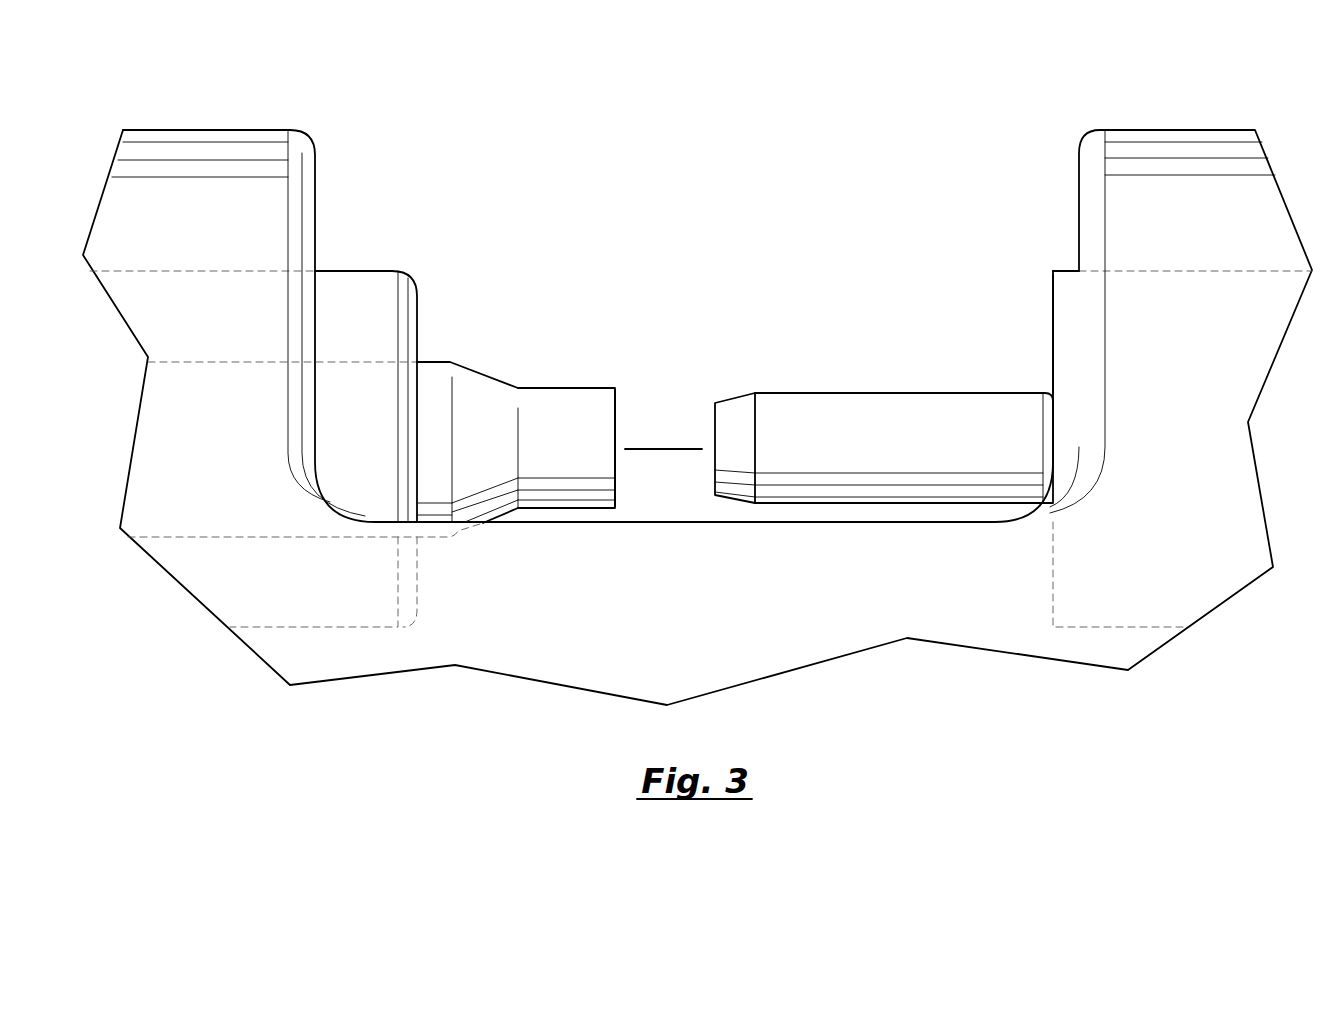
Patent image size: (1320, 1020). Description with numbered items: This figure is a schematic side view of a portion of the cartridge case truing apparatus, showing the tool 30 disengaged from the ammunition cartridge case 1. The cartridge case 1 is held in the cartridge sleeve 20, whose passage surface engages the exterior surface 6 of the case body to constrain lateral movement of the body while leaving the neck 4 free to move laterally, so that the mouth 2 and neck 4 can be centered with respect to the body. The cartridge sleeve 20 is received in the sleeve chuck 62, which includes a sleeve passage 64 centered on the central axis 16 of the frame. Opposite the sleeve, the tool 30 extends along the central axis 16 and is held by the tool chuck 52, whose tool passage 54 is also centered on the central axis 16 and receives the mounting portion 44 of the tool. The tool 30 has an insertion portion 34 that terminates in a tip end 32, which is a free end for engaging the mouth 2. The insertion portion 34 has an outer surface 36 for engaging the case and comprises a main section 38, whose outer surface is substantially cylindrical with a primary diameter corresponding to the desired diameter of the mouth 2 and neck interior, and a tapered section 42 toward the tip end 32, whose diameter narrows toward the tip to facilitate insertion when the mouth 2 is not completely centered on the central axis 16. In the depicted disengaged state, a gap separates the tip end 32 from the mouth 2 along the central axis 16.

The ammunition cartridge case 1 is at (538, 378).
The mouth 2 is at (615, 420).
The neck 4 is at (570, 400).
The exterior surface 6 is at (435, 370).
The central axis 16 is at (668, 449).
The cartridge sleeve 20 is at (390, 272).
The tool 30 is at (812, 383).
The tip end 32 is at (709, 480).
The insertion portion 34 is at (860, 383).
The outer surface 36 is at (982, 413).
The main section 38 is at (907, 413).
The tapered section 42 is at (737, 405).
The mounting portion 44 is at (1068, 278).
The tool chuck 52 is at (1073, 193).
The tool passage 54 is at (1180, 271).
The sleeve chuck 62 is at (348, 256).
The sleeve passage 64 is at (225, 268).